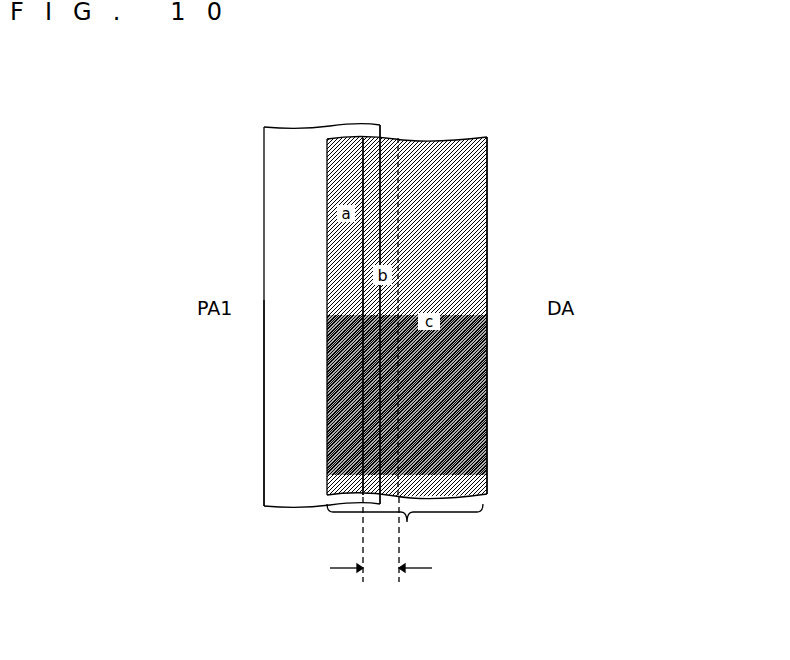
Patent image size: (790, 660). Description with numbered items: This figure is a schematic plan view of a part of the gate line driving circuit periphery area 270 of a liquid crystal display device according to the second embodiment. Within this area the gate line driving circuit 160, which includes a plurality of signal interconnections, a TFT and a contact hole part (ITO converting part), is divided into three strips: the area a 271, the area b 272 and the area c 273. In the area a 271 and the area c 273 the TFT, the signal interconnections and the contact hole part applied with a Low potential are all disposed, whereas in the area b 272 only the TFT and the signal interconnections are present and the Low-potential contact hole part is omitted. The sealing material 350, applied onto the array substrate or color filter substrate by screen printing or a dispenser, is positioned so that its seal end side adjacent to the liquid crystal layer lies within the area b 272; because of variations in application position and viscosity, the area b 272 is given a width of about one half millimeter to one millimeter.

The gate line driving circuit periphery area 270 is at (206, 89).
The area a 271 is at (358, 112).
The area b 272 is at (399, 120).
The area c 273 is at (480, 133).
The sealing material 350 is at (295, 445).
The gate line driving circuit 160 is at (395, 551).